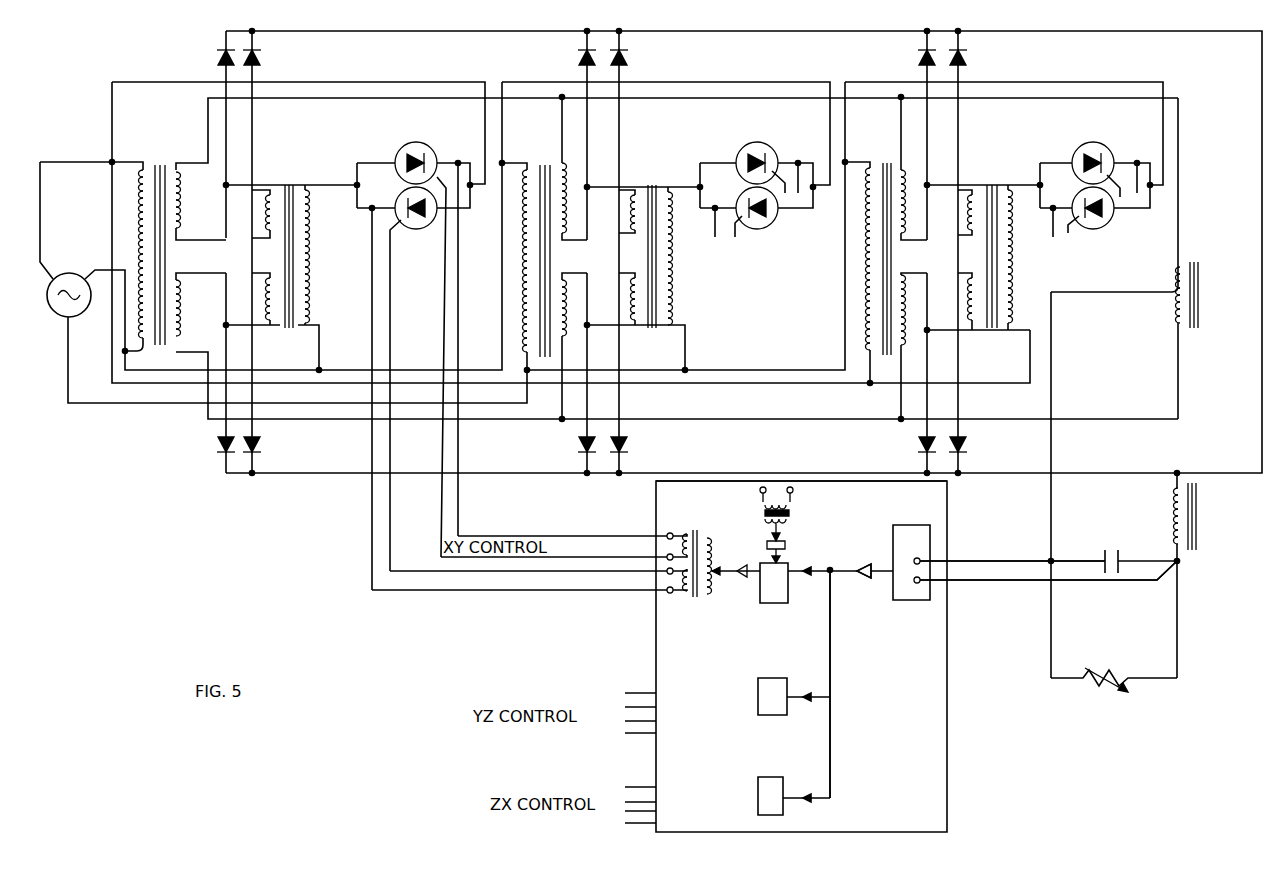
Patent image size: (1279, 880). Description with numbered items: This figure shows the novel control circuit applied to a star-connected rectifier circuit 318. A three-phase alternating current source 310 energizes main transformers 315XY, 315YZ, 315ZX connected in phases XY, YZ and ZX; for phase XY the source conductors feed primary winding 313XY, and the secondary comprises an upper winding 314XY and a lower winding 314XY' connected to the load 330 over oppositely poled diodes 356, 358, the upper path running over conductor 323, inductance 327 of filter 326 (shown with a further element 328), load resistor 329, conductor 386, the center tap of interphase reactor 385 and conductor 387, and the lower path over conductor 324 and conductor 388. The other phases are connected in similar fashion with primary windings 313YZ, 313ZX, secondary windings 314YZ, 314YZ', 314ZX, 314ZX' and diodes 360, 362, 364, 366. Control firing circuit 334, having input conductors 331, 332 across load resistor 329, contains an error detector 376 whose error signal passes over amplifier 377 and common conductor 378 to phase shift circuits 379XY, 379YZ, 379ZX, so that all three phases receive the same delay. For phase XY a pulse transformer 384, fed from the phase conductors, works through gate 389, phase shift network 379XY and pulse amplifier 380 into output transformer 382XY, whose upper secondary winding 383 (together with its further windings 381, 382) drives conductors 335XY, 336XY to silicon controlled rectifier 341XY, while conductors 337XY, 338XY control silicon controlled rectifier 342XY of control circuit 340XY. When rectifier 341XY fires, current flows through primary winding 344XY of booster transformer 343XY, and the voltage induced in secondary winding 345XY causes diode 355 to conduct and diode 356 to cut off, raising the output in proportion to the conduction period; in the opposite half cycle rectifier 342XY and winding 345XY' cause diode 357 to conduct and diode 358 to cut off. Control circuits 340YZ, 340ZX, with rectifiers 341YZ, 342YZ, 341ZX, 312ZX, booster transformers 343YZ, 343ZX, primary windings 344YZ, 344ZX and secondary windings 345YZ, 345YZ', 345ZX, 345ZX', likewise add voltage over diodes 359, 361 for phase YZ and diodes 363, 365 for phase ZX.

The three-phase alternating current source 310 is at (66, 295).
The primary winding 313XY is at (135, 220).
The upper secondary winding 314XY is at (195, 200).
The lower secondary winding 314XY' is at (196, 308).
The main transformer 315XY is at (182, 153).
The secondary winding of booster transformer 345XY is at (284, 188).
The second secondary winding of booster transformer 345XY' is at (284, 313).
The booster transformer 343XY is at (317, 244).
The primary winding of booster transformer 344XY is at (313, 259).
The control circuit 340XY is at (419, 351).
The first silicon controlled rectifier 341XY is at (438, 342).
The silicon controlled rectifier 342XY is at (420, 379).
The diode 355 is at (262, 57).
The diode 356 is at (219, 57).
The diode 357 is at (262, 445).
The diode 358 is at (218, 445).
The diode 359 is at (628, 56).
The rectifier diode 360 is at (580, 56).
The diode 361 is at (628, 445).
The rectifier diode 362 is at (580, 445).
The diode 363 is at (967, 56).
The rectifier diode 364 is at (922, 56).
The diode 365 is at (967, 445).
The rectifier diode 366 is at (918, 445).
The conductor 323 is at (741, 31).
The star-connected rectifier circuit 318 is at (1093, 53).
The main transformer 315YZ is at (560, 151).
The primary winding of transformer 315YZ 313YZ is at (514, 240).
The secondary winding of transformer 315YZ 314YZ is at (583, 198).
The second secondary winding of transformer 315YZ 314YZ' is at (587, 294).
The saturable transformer YZ 343YZ is at (690, 182).
The core of transformer 343YZ 344YZ is at (678, 280).
The primary winding of transformer 343YZ 345YZ is at (627, 228).
The second primary winding of transformer 343YZ 345YZ' is at (651, 313).
The control circuit 340YZ is at (767, 174).
The controlled rectifier 341YZ is at (782, 159).
The controlled rectifier 342YZ is at (784, 212).
The main transformer 315ZX is at (885, 244).
The primary winding of transformer 315ZX 313ZX is at (854, 252).
The secondary winding of transformer 315ZX 314ZX is at (919, 202).
The second secondary winding of transformer 315ZX 314ZX' is at (928, 298).
The saturable transformer ZX 343ZX is at (1022, 183).
The core of transformer 343ZX 344ZX is at (1017, 278).
The primary winding of transformer 343ZX 345ZX is at (963, 226).
The second primary winding of transformer 343ZX 345ZX' is at (992, 313).
The control circuit 340ZX is at (1105, 174).
The controlled rectifier 341ZX is at (1120, 165).
The controlled rectifier 312ZX is at (1119, 210).
The conductor 387 is at (1180, 122).
The conductor 388 is at (1176, 410).
The conductor 386 is at (1138, 296).
The interphase reactor 385 is at (1204, 295).
The inductance 327 is at (1172, 507).
The filter 326 is at (1235, 521).
The capacitor 328 is at (1123, 550).
The input conductor 332 is at (962, 560).
The input conductor 331 is at (972, 583).
The load 330 is at (1122, 661).
The load resistor 329 is at (1104, 686).
The control firing circuit 334 is at (1010, 749).
The conductor 324 is at (689, 478).
The output transformer 382XY is at (704, 566).
The upper winding 383 is at (679, 553).
The secondary windings of pulse transformer 382 is at (673, 572).
The primary winding of pulse transformer 381 is at (709, 553).
The pulse amplifier 380 is at (736, 573).
The phase shift circuit 379XY is at (789, 596).
The pulse transformer 384 is at (782, 514).
The gate 389 is at (792, 550).
The amplifier 377 is at (870, 560).
The common conductor 378 is at (836, 590).
The error detector circuit 376 is at (926, 630).
The phase shift circuit 379YZ is at (782, 707).
The phase shift circuit 379ZX is at (800, 802).
The output conductor 335XY is at (602, 528).
The output conductor 336XY is at (600, 549).
The output conductor 337XY is at (587, 570).
The output conductor 338XY is at (582, 590).